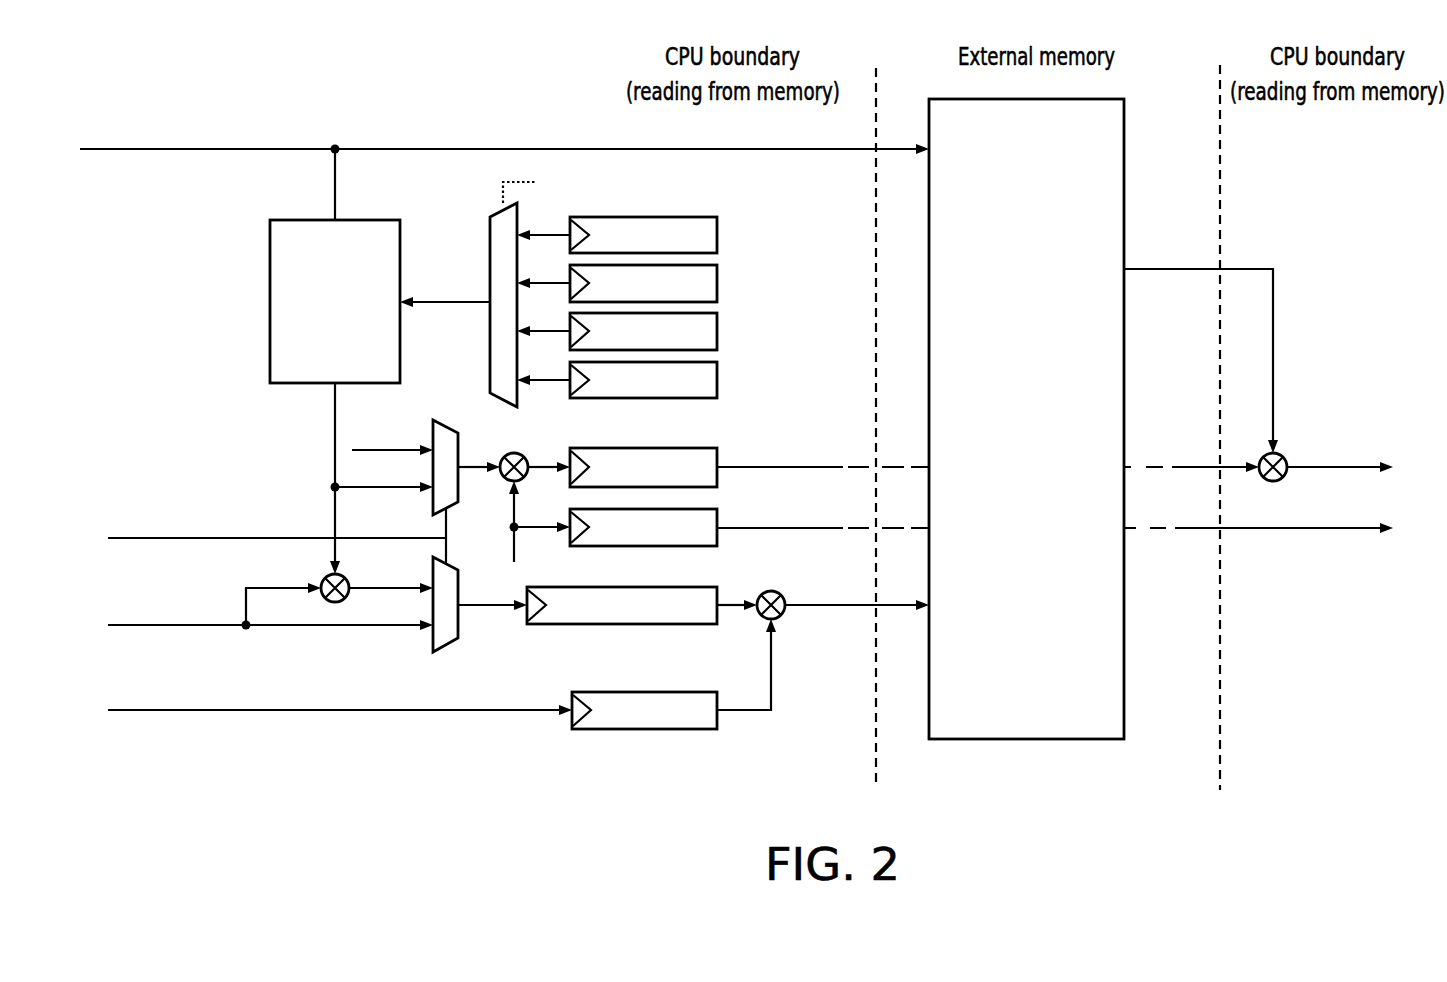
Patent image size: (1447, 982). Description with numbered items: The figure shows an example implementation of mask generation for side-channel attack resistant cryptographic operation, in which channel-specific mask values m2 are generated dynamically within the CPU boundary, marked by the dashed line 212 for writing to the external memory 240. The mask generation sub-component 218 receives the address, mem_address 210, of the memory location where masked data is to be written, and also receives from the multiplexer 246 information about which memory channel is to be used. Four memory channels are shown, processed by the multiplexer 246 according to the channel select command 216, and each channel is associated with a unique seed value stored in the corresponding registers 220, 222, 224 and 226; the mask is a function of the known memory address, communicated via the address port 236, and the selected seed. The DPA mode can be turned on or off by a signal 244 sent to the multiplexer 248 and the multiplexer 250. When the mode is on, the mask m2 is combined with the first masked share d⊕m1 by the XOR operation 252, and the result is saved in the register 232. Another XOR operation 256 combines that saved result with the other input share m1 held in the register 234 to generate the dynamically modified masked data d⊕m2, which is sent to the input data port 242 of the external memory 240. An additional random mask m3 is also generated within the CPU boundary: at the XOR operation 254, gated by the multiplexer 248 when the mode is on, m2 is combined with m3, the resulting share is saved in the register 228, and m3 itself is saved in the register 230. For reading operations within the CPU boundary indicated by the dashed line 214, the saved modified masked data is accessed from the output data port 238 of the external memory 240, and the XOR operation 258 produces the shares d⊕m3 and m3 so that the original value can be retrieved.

The mem_address 210 is at (192, 129).
The dashed line 212 is at (875, 423).
The dashed line 214 is at (1222, 167).
The channel select command 216 is at (680, 183).
The mask generation sub-component 218 is at (314, 356).
The register 220 is at (719, 233).
The register 222 is at (719, 281).
The register 224 is at (719, 329).
The register 226 is at (719, 378).
The register 228 is at (598, 448).
The register 230 is at (595, 548).
The register 232 is at (595, 626).
The register 234 is at (595, 731).
The address port 236 is at (1030, 148).
The output data port 238 is at (1031, 255).
The external memory 240 is at (1007, 432).
The input data port 242 is at (1006, 622).
The signal 244 is at (240, 540).
The multiplexer 246 is at (490, 340).
The multiplexer 248 is at (447, 420).
The multiplexer 250 is at (446, 648).
The XOR operation 252 is at (318, 575).
The XOR operation 254 is at (515, 452).
The XOR operation 256 is at (774, 584).
The XOR operation 258 is at (1282, 481).